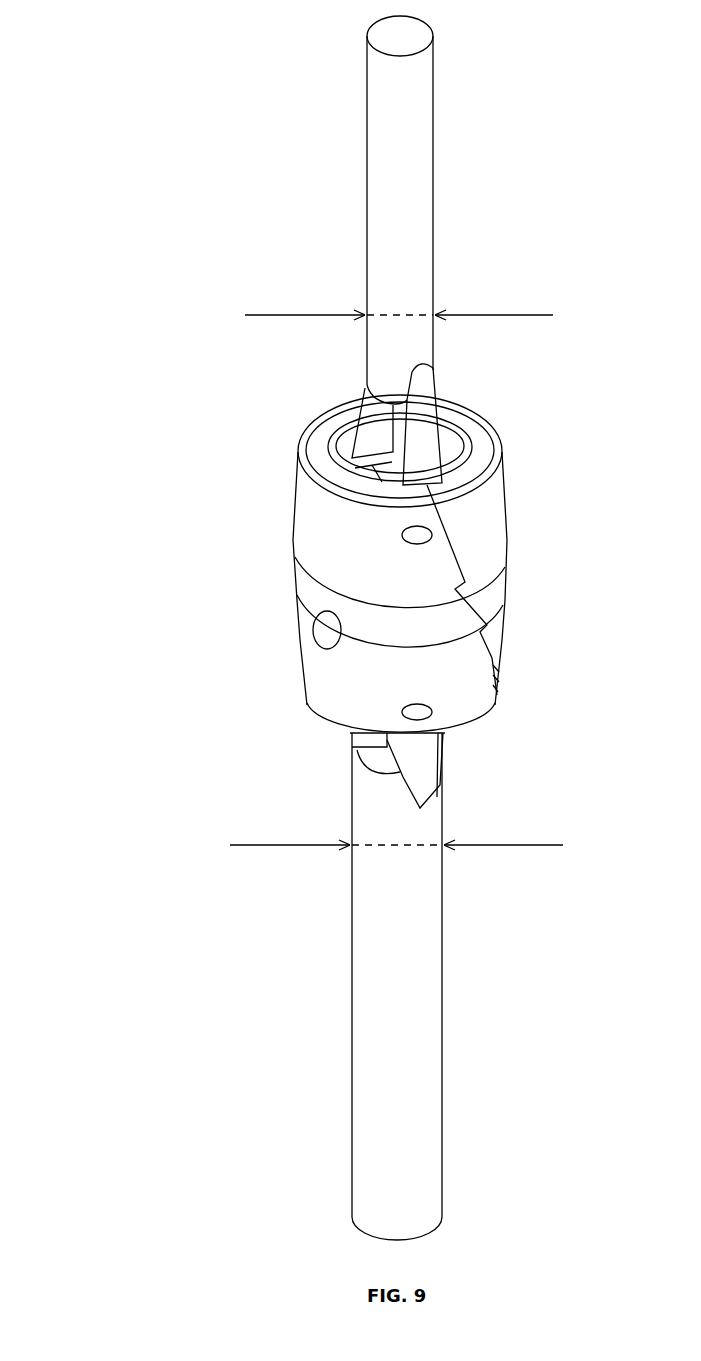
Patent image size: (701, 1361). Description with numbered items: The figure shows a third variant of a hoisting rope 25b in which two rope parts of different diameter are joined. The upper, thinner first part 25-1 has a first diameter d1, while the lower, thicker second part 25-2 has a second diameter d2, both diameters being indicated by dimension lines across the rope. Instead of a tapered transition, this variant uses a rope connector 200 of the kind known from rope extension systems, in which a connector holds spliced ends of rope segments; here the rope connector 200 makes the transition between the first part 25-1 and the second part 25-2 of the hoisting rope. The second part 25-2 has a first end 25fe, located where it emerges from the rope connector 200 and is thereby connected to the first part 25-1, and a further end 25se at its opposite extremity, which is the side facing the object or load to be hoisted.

The hoisting rope 25b is at (136, 140).
The first part 25-1 is at (398, 210).
The second part 25-2 is at (407, 983).
The rope connector 200 is at (480, 536).
The first end 25fe is at (343, 747).
The further end 25se is at (343, 1199).
The first diameter d1 is at (399, 303).
The second diameter d2 is at (396, 833).